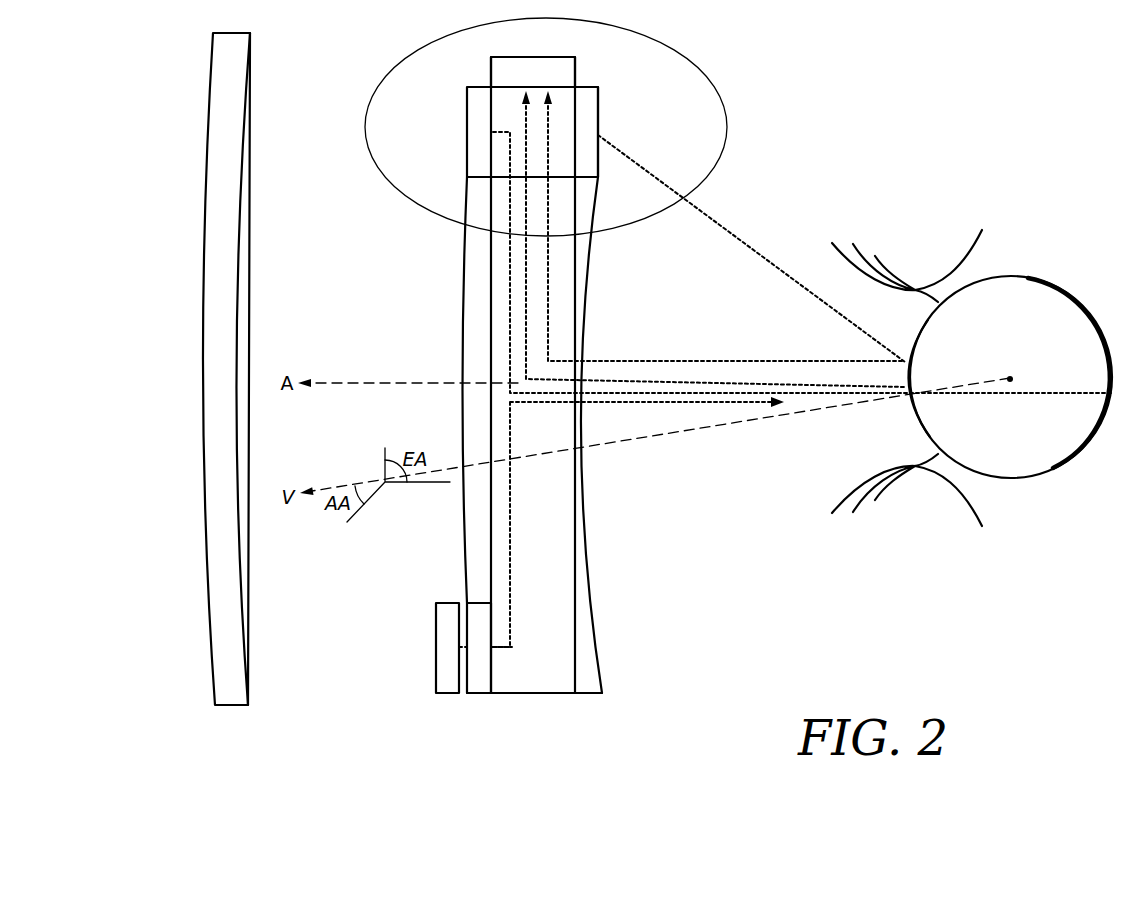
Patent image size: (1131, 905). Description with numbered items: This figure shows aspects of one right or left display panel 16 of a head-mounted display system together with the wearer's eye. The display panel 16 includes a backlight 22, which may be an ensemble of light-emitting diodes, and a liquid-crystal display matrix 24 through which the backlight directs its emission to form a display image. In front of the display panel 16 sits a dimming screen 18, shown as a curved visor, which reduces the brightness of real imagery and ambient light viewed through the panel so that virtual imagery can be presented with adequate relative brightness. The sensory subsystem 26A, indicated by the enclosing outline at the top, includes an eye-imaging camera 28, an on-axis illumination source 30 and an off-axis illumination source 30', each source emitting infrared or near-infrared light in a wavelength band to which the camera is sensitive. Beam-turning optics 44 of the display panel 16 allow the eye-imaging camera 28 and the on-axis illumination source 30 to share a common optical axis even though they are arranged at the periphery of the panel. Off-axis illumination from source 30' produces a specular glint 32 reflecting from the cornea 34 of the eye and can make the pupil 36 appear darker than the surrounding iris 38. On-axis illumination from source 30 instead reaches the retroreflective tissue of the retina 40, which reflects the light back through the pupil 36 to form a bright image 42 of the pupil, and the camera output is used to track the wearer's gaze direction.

The display panel 16 is at (662, 646).
The dimming screen 18 is at (211, 641).
The backlight 22 is at (436, 648).
The liquid-crystal display matrix 24 is at (480, 694).
The sensory subsystem 26A is at (630, 31).
The eye-imaging camera 28 is at (520, 81).
The on-axis illumination source 30 is at (491, 132).
The off-axis illumination source 30' is at (629, 132).
The specular glint 32 is at (665, 361).
The cornea 34 is at (910, 401).
The pupil 36 is at (930, 375).
The iris 38 is at (913, 410).
The retina 40 is at (1060, 295).
The bright image 42 is at (615, 361).
The beam-turning optics 44 is at (520, 681).